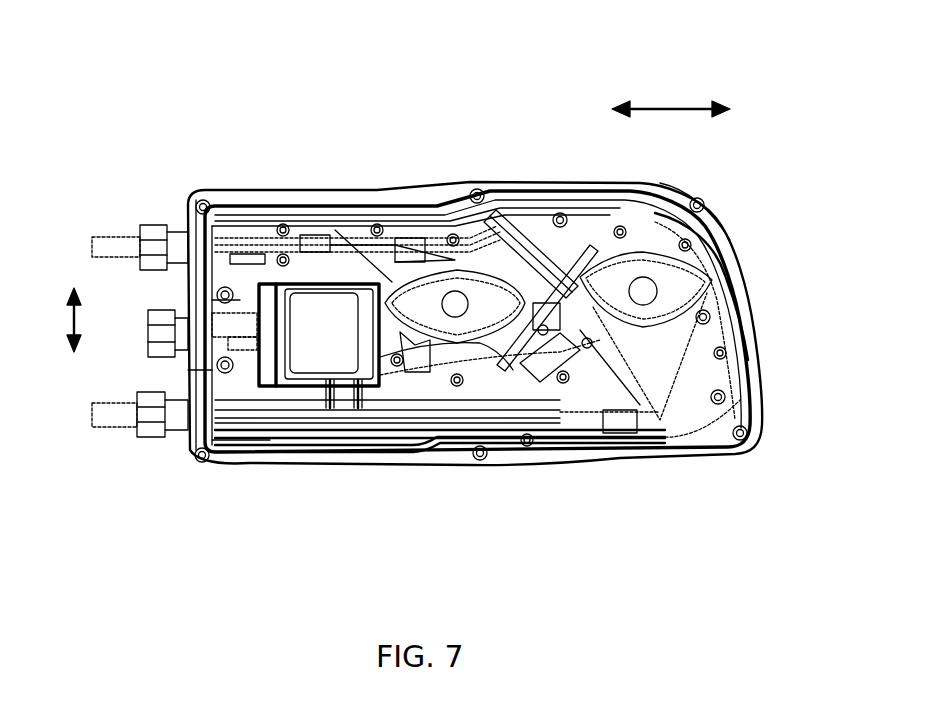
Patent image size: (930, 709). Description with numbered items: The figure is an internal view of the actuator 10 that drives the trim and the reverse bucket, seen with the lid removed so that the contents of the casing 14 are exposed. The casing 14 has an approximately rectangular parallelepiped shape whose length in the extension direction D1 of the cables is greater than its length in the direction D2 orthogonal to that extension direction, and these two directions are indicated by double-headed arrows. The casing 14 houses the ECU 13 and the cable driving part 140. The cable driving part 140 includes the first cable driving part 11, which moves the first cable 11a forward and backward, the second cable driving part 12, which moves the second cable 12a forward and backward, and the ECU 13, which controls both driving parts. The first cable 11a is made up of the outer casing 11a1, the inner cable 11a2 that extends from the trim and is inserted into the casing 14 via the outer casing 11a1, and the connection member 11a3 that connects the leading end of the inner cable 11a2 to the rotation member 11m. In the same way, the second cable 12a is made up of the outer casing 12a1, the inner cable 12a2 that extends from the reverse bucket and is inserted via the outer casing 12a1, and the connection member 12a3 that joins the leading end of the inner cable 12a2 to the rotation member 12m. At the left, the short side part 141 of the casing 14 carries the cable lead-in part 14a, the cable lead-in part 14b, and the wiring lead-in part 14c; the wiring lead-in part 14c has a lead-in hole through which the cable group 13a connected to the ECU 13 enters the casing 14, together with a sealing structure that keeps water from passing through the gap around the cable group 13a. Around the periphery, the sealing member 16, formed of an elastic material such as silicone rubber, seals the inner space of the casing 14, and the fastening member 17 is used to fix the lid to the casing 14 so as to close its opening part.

The actuator 10 is at (118, 52).
The first cable driving part 11 is at (467, 253).
The first cable 11a is at (309, 88).
The outer casing 11a1 is at (265, 245).
The inner cable 11a2 is at (352, 250).
The connection member 11a3 is at (420, 240).
The rotation member 11m is at (446, 253).
The second cable driving part 12 is at (605, 240).
The second cable 12a is at (389, 558).
The outer casing 12a1 is at (270, 413).
The inner cable 12a2 is at (512, 418).
The connection member 12a3 is at (612, 425).
The rotation member 12m is at (657, 378).
The ECU 13 is at (305, 340).
The cable group 13a is at (240, 340).
The casing 14 is at (722, 232).
The cable lead-in part 14a is at (150, 225).
The cable lead-in part 14b is at (150, 420).
The wiring lead-in part 14c is at (160, 305).
The cable driving part 140 is at (540, 104).
The short side part 141 is at (187, 363).
The sealing member 16 is at (732, 295).
The fastening member 17 is at (697, 205).
The extension direction D1 is at (680, 108).
The direction orthogonal to extension direction D2 is at (70, 322).